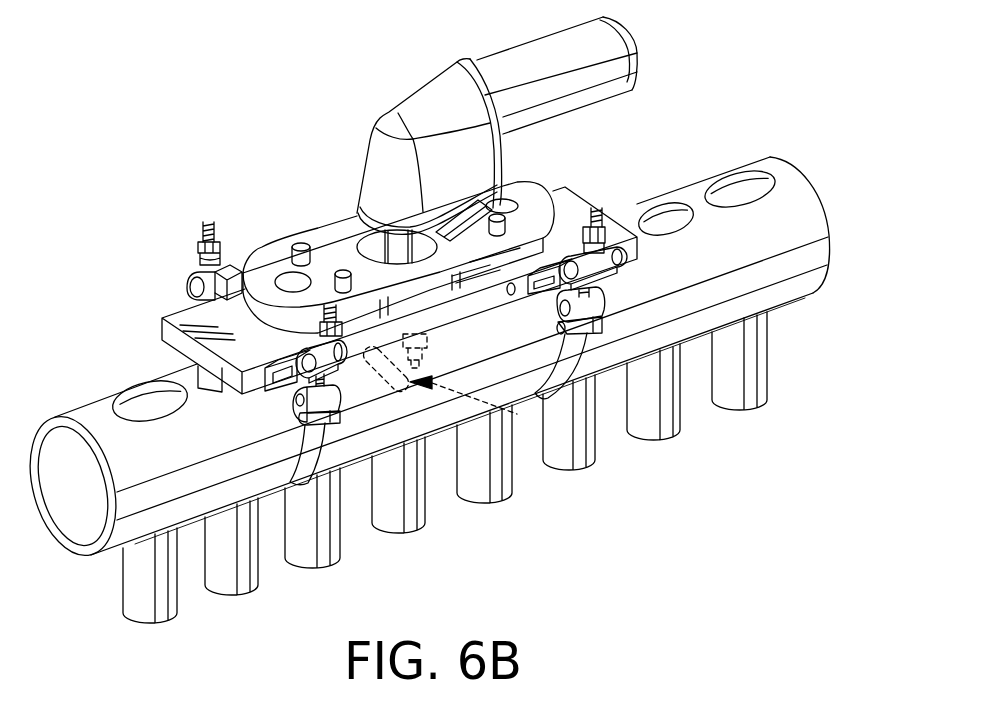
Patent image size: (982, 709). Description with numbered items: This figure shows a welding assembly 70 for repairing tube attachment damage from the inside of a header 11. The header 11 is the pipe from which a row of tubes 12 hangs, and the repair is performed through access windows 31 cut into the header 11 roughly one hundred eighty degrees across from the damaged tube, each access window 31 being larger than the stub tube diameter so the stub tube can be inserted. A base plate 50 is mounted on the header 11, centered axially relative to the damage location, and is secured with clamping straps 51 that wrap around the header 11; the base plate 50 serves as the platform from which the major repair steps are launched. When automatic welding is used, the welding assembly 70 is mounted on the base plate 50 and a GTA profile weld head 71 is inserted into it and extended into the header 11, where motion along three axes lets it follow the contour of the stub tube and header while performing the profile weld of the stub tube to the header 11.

The header 11 is at (788, 188).
The outlet tubes 12 is at (495, 490).
The access window 31 is at (643, 218).
The base plate 50 is at (557, 182).
The clamping straps 51 is at (193, 233).
The welding assembly 70 is at (334, 110).
The GTA profile weld head 71 is at (451, 384).